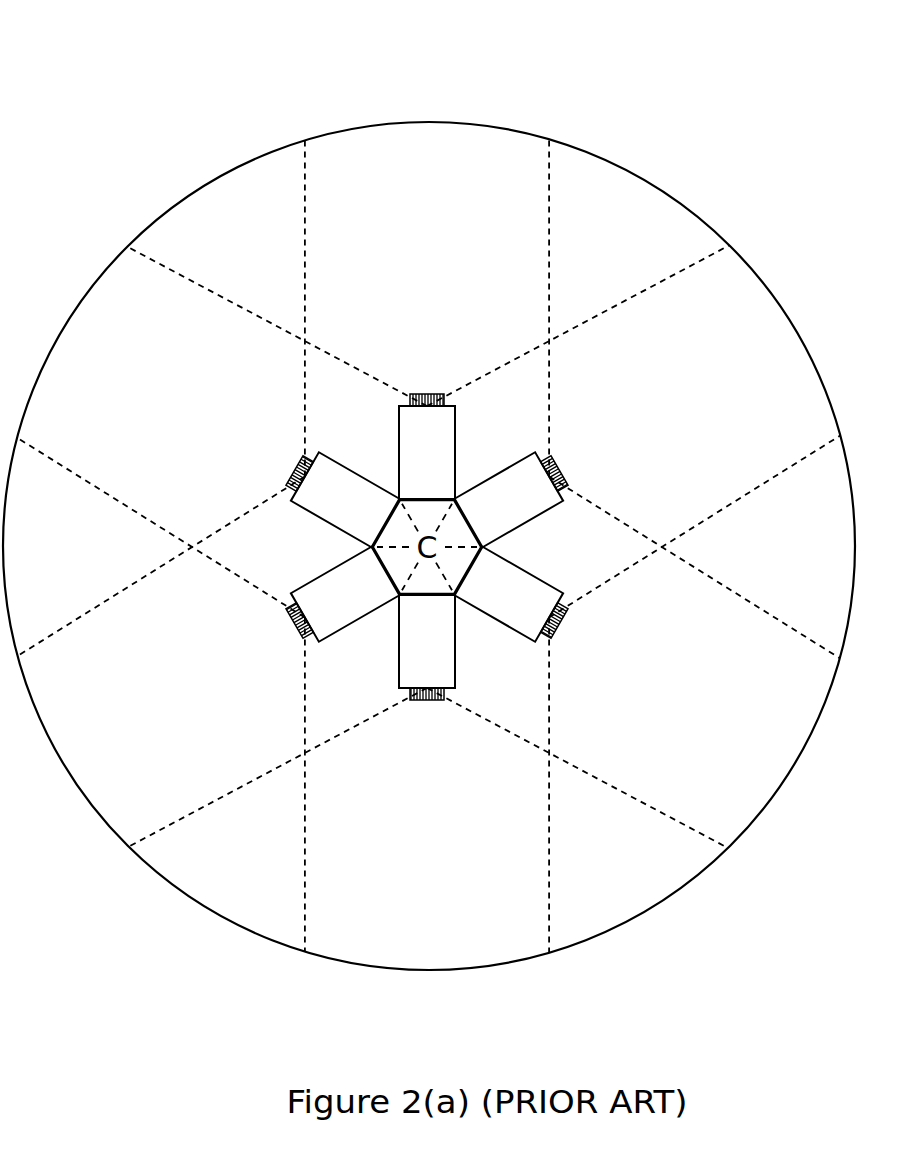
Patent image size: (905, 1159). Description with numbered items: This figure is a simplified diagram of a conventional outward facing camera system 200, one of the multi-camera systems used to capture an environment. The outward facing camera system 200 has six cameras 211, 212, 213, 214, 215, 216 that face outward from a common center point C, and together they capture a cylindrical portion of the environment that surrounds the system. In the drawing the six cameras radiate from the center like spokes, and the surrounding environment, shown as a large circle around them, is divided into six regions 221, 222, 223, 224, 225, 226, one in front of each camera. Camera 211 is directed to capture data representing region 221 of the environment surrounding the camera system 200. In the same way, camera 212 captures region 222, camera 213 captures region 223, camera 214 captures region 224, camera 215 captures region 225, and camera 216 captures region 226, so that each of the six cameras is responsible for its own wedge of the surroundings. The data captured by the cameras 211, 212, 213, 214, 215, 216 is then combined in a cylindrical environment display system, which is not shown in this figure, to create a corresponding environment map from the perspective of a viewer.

The outward facing camera system 200 is at (388, 72).
The camera 211 is at (427, 446).
The camera 212 is at (514, 496).
The camera 213 is at (514, 597).
The camera 214 is at (427, 647).
The camera 215 is at (339, 597).
The camera 216 is at (339, 496).
The region 221 is at (397, 283).
The region 222 is at (638, 414).
The region 223 is at (638, 679).
The region 224 is at (414, 774).
The region 225 is at (164, 683).
The region 226 is at (164, 443).